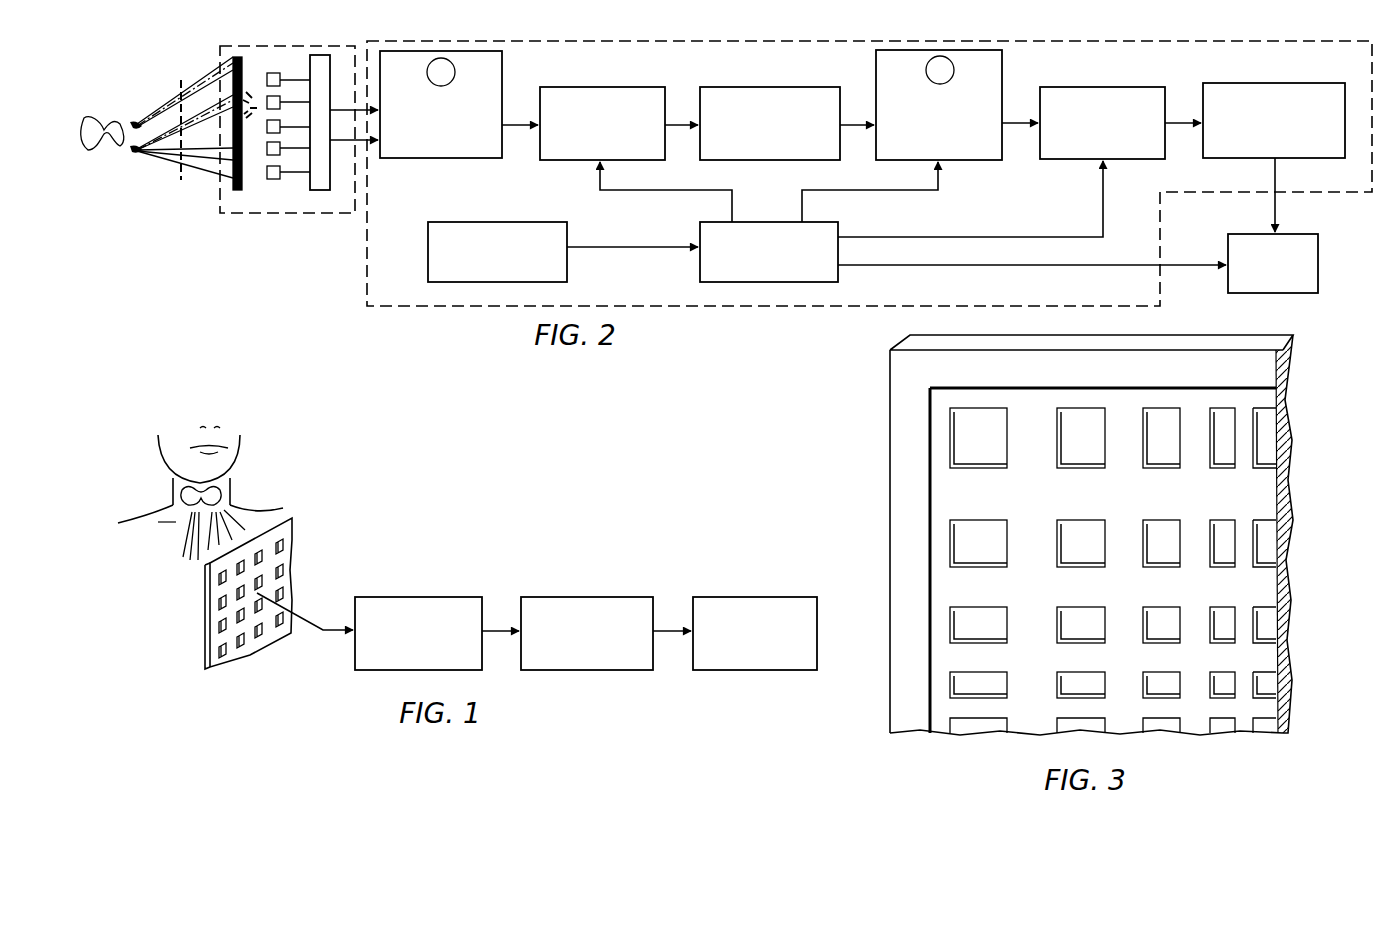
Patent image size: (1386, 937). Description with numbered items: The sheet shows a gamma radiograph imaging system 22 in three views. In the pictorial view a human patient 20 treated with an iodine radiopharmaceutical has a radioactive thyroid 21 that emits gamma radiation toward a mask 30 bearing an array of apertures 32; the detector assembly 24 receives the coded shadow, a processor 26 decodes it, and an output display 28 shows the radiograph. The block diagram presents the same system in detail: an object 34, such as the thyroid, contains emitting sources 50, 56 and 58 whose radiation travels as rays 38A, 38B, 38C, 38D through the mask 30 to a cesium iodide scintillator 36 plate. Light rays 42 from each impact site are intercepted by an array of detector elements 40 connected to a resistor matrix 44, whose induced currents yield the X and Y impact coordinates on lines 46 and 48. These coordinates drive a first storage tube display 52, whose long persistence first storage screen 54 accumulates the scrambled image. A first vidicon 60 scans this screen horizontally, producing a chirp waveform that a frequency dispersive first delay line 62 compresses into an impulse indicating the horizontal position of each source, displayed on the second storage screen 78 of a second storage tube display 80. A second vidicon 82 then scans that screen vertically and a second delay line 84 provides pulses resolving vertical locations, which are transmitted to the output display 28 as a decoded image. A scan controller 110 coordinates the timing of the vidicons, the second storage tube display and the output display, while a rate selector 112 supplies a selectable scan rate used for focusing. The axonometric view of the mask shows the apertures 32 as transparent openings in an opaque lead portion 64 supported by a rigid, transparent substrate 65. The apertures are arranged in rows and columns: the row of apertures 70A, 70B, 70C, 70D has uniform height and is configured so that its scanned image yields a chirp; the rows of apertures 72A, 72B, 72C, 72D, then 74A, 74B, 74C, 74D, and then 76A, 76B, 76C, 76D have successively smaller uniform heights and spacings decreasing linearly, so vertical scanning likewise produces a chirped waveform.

In FIG. 1, the human patient 20 is at (238, 444).
In FIG. 1, the thyroid 21 is at (218, 485).
In FIG. 2, the imaging system 22 is at (330, 288).
In FIG. 1, the imaging system 22 is at (240, 687).
In FIG. 2, the detector assembly 24 is at (272, 215).
In FIG. 1, the detector assembly 24 is at (412, 597).
In FIG. 2, the processor 26 is at (425, 308).
In FIG. 1, the processor 26 is at (568, 597).
In FIG. 2, the output display 28 is at (1310, 277).
In FIG. 1, the output display 28 is at (724, 597).
In FIG. 2, the mask 30 is at (156, 172).
In FIG. 1, the mask 30 is at (258, 647).
In FIG. 3, the mask 30 is at (880, 688).
In FIG. 2, the apertures 32 is at (176, 96).
In FIG. 1, the apertures 32 is at (308, 588).
In FIG. 3, the apertures 32 is at (1078, 410).
In FIG. 2, the object 34 is at (92, 115).
In FIG. 2, the scintillator 36 is at (238, 190).
In FIG. 2, the ray 38A is at (204, 75).
In FIG. 2, the ray 38B is at (214, 115).
In FIG. 2, the ray 38C is at (192, 155).
In FIG. 2, the ray 38D is at (203, 172).
In FIG. 2, the detector elements 40 is at (274, 74).
In FIG. 2, the light rays 42 is at (252, 92).
In FIG. 2, the resistor matrix 44 is at (326, 190).
In FIG. 2, the line 46 is at (340, 112).
In FIG. 2, the line 48 is at (340, 142).
In FIG. 2, the source 50 is at (132, 152).
In FIG. 2, the first storage tube display 52 is at (496, 90).
In FIG. 2, the first storage screen 54 is at (450, 80).
In FIG. 2, the source 56 is at (135, 120).
In FIG. 2, the source 58 is at (90, 140).
In FIG. 2, the first vidicon 60 is at (626, 88).
In FIG. 2, the first delay line 62 is at (806, 88).
In FIG. 3, the opaque portion 64 is at (1020, 500).
In FIG. 3, the substrate 65 is at (1194, 372).
In FIG. 3, the aperture 70A is at (988, 446).
In FIG. 3, the aperture 70B is at (1064, 446).
In FIG. 3, the aperture 70C is at (1165, 458).
In FIG. 3, the aperture 70D is at (1228, 458).
In FIG. 3, the aperture 72A is at (988, 551).
In FIG. 3, the aperture 72B is at (1064, 551).
In FIG. 3, the aperture 72C is at (1158, 528).
In FIG. 3, the aperture 72D is at (1226, 528).
In FIG. 3, the aperture 74A is at (988, 634).
In FIG. 3, the aperture 74B is at (1064, 634).
In FIG. 3, the aperture 74C is at (1160, 612).
In FIG. 3, the aperture 74D is at (1225, 612).
In FIG. 3, the aperture 76A is at (988, 678).
In FIG. 3, the aperture 76B is at (1088, 678).
In FIG. 3, the aperture 76C is at (1170, 678).
In FIG. 3, the aperture 76D is at (1230, 678).
In FIG. 2, the second storage screen 78 is at (949, 78).
In FIG. 2, the second storage tube display 80 is at (996, 92).
In FIG. 2, the second vidicon 82 is at (1140, 90).
In FIG. 2, the second delay line 84 is at (1280, 86).
In FIG. 2, the scan controller 110 is at (834, 232).
In FIG. 2, the rate selector 112 is at (500, 224).